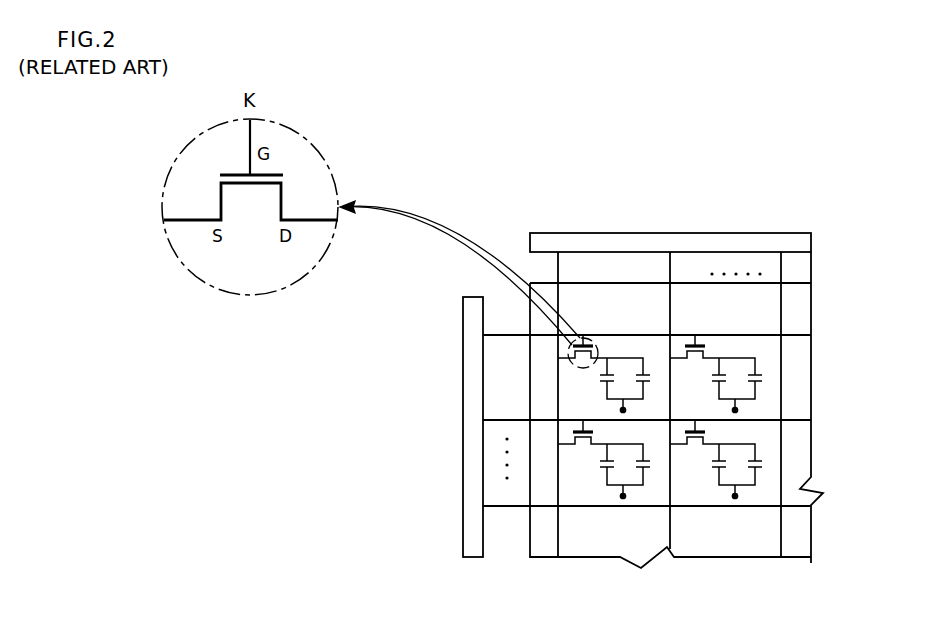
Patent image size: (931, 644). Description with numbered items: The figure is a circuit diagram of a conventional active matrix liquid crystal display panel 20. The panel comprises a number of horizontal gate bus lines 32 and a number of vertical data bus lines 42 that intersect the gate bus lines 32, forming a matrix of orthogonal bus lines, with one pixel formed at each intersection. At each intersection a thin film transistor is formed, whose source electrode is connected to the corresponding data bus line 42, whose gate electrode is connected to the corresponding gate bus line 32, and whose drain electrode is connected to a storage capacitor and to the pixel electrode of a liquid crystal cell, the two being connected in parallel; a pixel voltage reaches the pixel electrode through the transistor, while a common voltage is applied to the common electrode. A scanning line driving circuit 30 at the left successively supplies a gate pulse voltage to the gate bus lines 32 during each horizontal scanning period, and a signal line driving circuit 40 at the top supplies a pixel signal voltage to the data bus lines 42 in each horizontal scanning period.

The liquid crystal display panel 20 is at (629, 206).
The scanning line driving circuit 30 is at (473, 441).
The signal line driving circuit 40 is at (697, 240).
The gate bus lines 32 is at (796, 338).
The data bus lines 42 is at (558, 528).